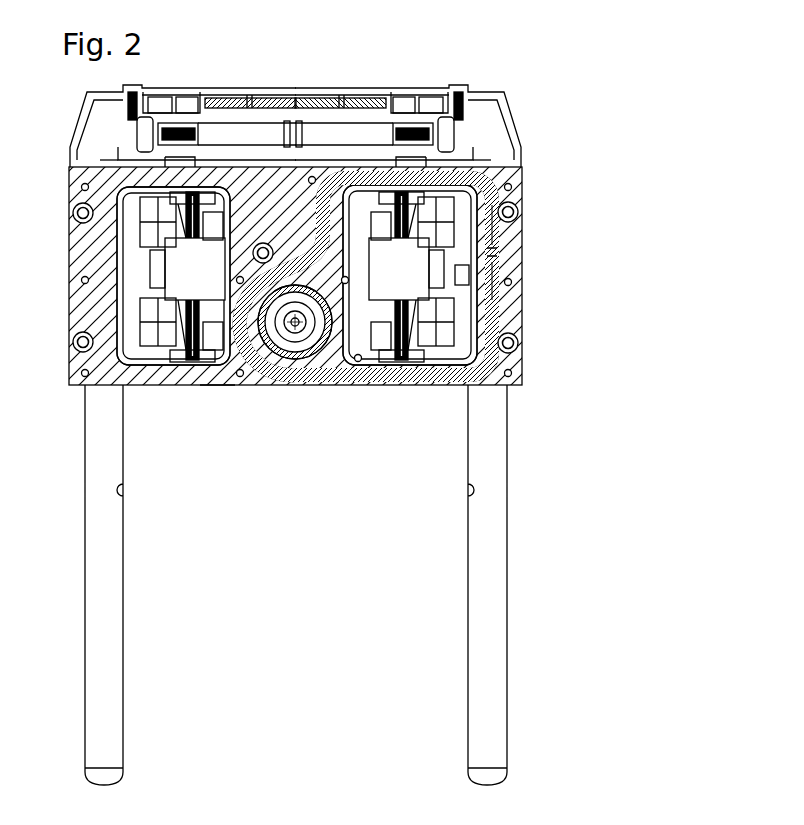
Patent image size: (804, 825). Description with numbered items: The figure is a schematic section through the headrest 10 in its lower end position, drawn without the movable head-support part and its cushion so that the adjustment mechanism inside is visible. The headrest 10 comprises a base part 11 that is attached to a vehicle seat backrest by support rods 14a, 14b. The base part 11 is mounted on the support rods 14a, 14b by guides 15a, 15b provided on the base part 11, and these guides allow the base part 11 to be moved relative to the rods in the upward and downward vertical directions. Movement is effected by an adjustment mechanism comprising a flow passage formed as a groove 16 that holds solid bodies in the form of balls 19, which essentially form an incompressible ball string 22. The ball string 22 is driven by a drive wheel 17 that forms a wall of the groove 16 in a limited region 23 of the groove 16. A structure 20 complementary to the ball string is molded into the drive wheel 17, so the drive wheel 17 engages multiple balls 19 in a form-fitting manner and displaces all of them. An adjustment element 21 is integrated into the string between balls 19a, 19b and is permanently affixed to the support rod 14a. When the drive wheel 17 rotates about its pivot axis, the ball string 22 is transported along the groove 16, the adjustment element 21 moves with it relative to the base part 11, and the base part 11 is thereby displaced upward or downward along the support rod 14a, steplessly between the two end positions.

The headrest 10 is at (503, 79).
The base part 11 is at (98, 195).
The support rod 14a is at (485, 623).
The support rod 14b is at (115, 641).
The guide 15a is at (511, 304).
The guide 15b is at (90, 302).
The groove 16 is at (502, 322).
The drive wheel 17 is at (283, 386).
The balls 19 is at (513, 362).
The ball 19a is at (498, 233).
The ball 19b is at (498, 262).
The structure complementary to the ball string 20 is at (264, 386).
The adjustment element 21 is at (500, 253).
The ball string 22 is at (519, 197).
The limited region 23 is at (216, 386).